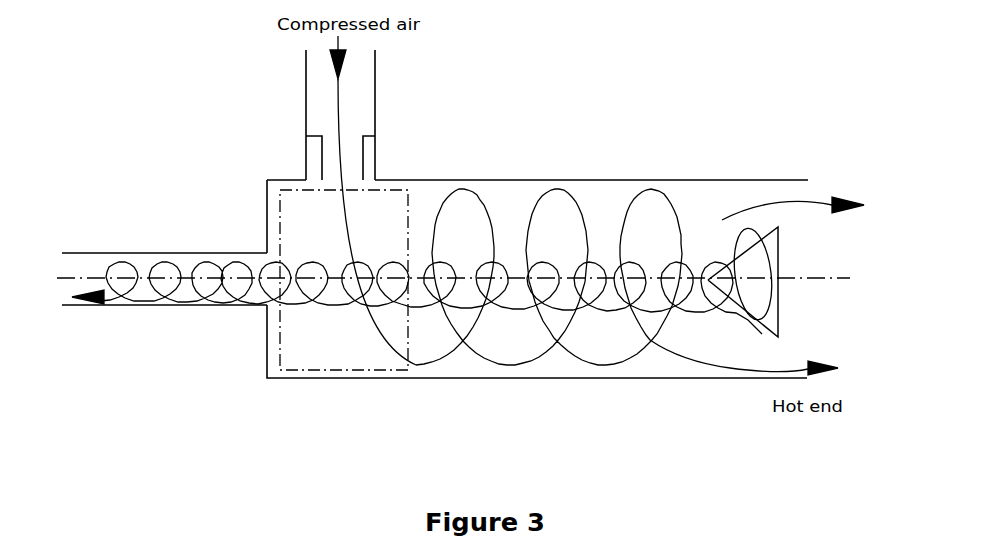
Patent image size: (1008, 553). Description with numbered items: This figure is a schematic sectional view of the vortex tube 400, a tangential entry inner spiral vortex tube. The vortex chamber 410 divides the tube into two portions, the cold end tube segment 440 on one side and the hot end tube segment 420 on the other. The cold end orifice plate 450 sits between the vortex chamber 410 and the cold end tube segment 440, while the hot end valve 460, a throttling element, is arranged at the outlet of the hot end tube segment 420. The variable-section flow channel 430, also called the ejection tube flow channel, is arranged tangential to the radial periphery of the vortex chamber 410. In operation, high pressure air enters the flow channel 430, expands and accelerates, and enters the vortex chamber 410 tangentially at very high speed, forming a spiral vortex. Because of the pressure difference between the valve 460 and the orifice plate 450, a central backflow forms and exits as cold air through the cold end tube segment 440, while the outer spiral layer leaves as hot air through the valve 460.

The vortex tube 400 is at (473, 42).
The vortex chamber 410 is at (295, 357).
The hot end tube segment 420 is at (598, 179).
The variable-section flow channel 430 is at (371, 148).
The cold end tube segment 440 is at (85, 253).
The cold end orifice plate 450 is at (267, 204).
The hot end valve 460 is at (787, 256).